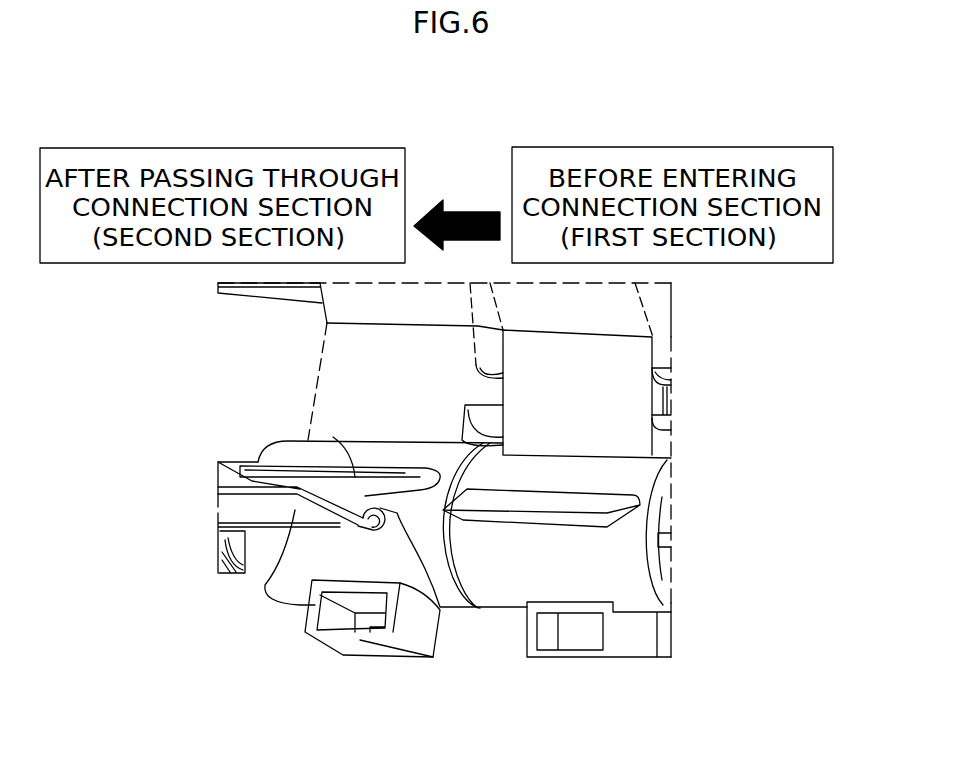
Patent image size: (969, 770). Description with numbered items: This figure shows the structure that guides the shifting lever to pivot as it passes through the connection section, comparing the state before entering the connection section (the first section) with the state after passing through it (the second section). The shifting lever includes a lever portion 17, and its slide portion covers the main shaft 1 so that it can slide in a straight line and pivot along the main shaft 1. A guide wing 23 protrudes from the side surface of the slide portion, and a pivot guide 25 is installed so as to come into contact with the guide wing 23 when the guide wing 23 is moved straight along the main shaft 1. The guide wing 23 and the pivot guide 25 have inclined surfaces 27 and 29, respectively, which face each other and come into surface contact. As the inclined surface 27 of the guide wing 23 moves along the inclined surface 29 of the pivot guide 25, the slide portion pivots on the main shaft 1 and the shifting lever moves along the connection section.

The main shaft 1 is at (218, 542).
The lever portion 17 is at (611, 305).
The guide wing 23 is at (353, 470).
The pivot guide 25 is at (295, 510).
The inclined surface 27 is at (218, 462).
The inclined surface 29 is at (380, 512).